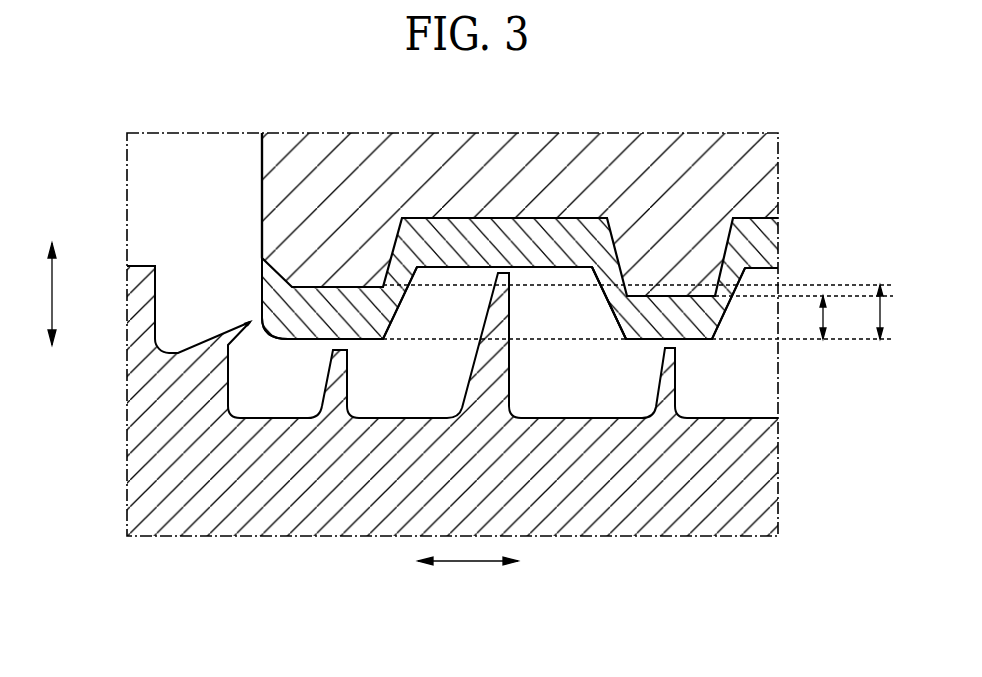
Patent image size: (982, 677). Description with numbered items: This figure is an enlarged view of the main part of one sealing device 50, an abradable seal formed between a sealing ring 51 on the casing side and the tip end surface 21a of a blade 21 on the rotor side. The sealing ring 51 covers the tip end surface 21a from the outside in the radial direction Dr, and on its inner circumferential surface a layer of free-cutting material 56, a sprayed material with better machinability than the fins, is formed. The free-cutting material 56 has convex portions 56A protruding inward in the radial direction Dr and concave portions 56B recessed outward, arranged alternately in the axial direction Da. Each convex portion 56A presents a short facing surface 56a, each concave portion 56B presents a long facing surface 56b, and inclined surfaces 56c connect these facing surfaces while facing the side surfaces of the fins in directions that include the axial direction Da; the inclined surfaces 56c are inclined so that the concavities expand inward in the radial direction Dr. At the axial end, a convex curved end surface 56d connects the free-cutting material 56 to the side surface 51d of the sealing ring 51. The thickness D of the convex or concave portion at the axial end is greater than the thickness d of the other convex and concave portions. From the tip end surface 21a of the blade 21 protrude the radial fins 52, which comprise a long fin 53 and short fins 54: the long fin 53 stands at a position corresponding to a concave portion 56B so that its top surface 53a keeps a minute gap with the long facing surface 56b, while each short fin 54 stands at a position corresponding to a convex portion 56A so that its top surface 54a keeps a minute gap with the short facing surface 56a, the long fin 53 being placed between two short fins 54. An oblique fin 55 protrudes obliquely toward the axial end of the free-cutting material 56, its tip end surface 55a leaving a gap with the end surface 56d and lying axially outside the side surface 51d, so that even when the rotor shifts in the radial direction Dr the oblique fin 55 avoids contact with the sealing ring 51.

The sealing device 50 is at (764, 114).
The sealing ring 51 is at (525, 190).
The side surface of the sealing ring 51d is at (259, 169).
The free-cutting material 56 is at (556, 239).
The convex portion of the free-cutting material 56A is at (683, 303).
The concave portion of the free-cutting material 56B is at (506, 218).
The short facing surface 56a is at (377, 345).
The long facing surface 56b is at (561, 270).
The inclined surface 56c is at (408, 337).
The end surface of the free-cutting material 56d is at (271, 334).
The blade 21 is at (498, 386).
The tip end surface of the blade 21a is at (752, 417).
The radial fins 52 is at (524, 398).
The long fin 53 is at (514, 369).
The top surface of the long fin 53a is at (512, 268).
The short fin 54 is at (524, 404).
The top surface of the short fin 54a is at (343, 338).
The oblique fin 55 is at (212, 322).
The tip end surface of the oblique fin 55a is at (250, 322).
The thickness d is at (835, 317).
The thickness D is at (889, 312).
The radial direction Dr is at (37, 294).
The axial direction Da is at (468, 578).